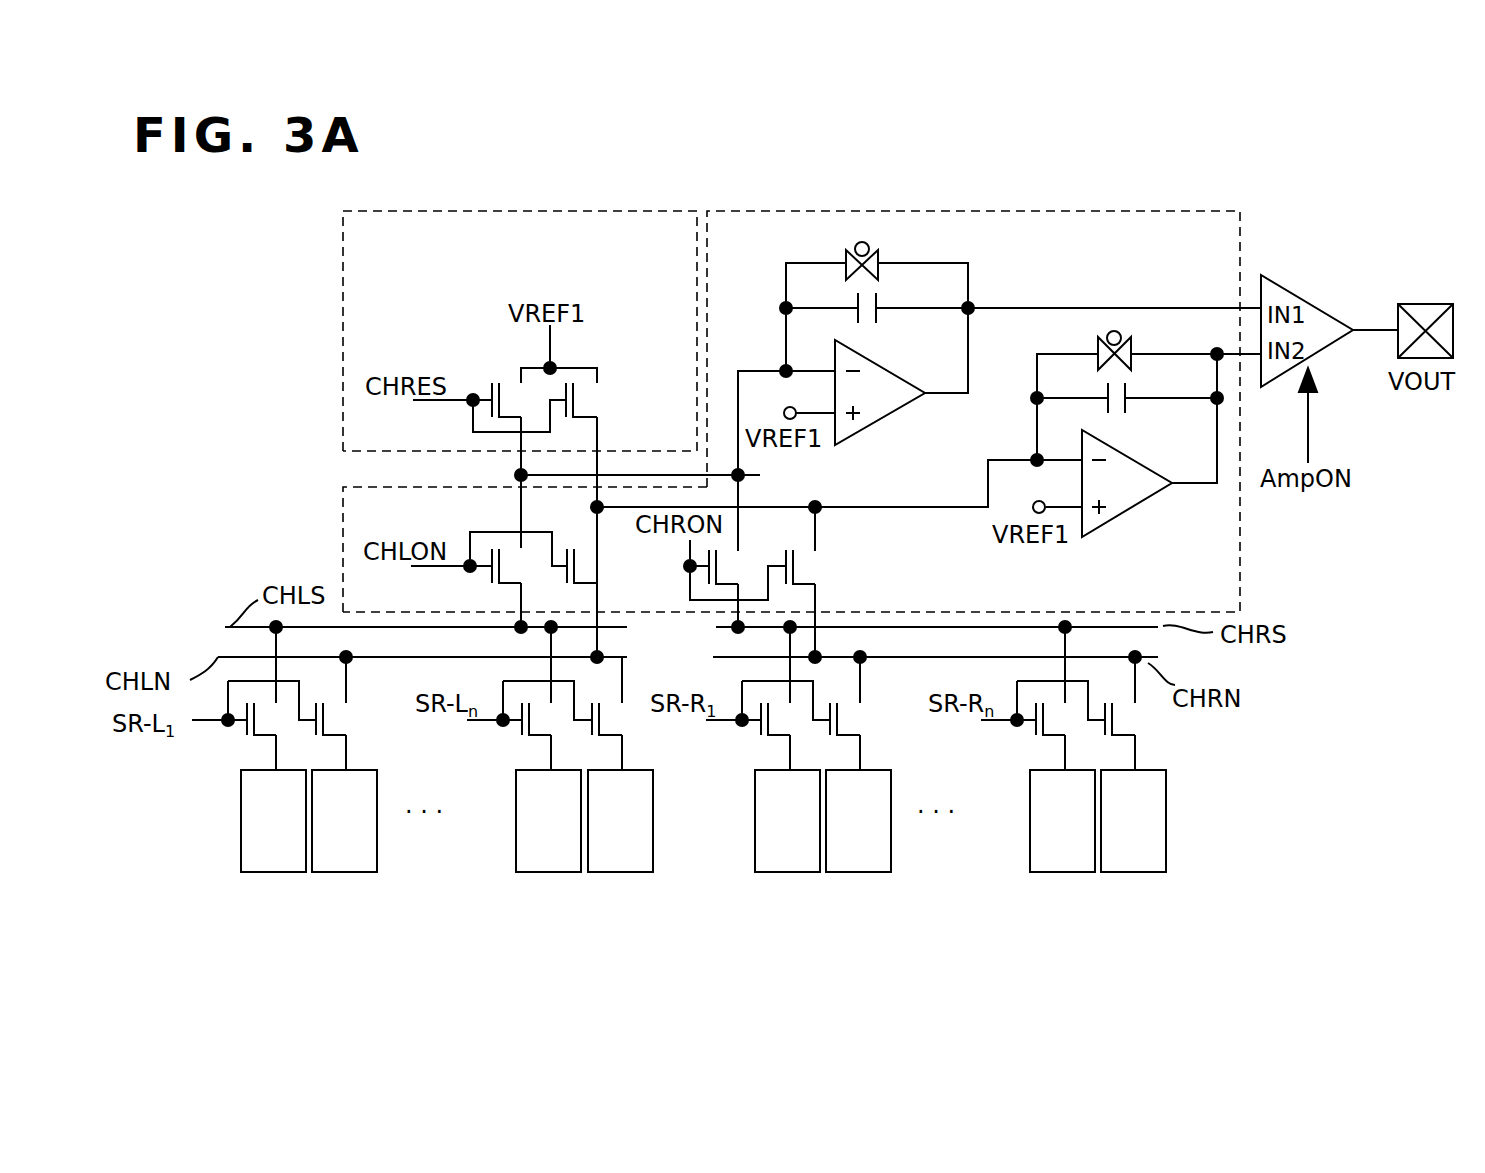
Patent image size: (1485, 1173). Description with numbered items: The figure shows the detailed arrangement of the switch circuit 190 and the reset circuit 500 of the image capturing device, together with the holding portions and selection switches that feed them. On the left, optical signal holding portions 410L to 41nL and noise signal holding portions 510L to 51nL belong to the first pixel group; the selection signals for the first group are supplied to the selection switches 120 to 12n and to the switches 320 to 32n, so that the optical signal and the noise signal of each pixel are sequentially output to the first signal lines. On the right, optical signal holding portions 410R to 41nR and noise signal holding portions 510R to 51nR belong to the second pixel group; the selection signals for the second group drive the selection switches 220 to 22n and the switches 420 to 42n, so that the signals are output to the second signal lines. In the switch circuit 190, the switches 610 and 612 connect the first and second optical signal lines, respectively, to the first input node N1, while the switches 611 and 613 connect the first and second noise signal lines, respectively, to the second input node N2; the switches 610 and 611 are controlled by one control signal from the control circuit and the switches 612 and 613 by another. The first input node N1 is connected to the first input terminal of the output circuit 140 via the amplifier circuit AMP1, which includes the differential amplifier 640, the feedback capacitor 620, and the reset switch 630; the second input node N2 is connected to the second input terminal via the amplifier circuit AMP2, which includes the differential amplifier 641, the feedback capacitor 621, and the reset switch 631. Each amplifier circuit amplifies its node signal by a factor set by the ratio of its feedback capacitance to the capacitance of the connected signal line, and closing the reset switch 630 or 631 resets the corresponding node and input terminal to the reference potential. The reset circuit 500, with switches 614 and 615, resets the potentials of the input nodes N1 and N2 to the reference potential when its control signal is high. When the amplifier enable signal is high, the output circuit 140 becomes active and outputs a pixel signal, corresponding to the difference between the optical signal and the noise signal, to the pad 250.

The reset circuit 500 is at (485, 210).
The switch circuit 190 is at (812, 210).
The switch 614 is at (508, 382).
The switch 615 is at (595, 400).
The switch 610 is at (508, 546).
The switch 611 is at (595, 566).
The switch 612 is at (738, 572).
The switch 613 is at (812, 567).
The reset switch 630 is at (870, 247).
The capacitive element (feedback capacitor) 620 is at (880, 318).
The reset switch 631 is at (1122, 335).
The capacitive element (feedback capacitor) 621 is at (1130, 413).
The differential amplifier 640 is at (930, 474).
The differential amplifier 641 is at (1153, 519).
The output circuit 140 is at (1293, 289).
The pad 250 is at (1420, 304).
The selection switch 120 is at (238, 733).
The selection switch 12n is at (513, 733).
The switch 320 is at (342, 717).
The switch 32n is at (618, 717).
The selection switch 220 is at (752, 733).
The selection switch 22n is at (1013, 744).
The switch 420 is at (856, 717).
The switch 42n is at (1133, 717).
The optical signal holding portion 410L is at (258, 872).
The noise signal holding portion 510L is at (355, 872).
The optical signal holding portion 41nL is at (535, 872).
The noise signal holding portion 51nL is at (632, 872).
The optical signal holding portion 410R is at (772, 872).
The noise signal holding portion 510R is at (869, 872).
The optical signal holding portion 41nR is at (1048, 872).
The noise signal holding portion 51nR is at (1147, 872).
The first input node N1 is at (748, 476).
The second input node N2 is at (922, 508).
The amplifier circuit AMP1 is at (933, 440).
The amplifier circuit AMP2 is at (1168, 532).